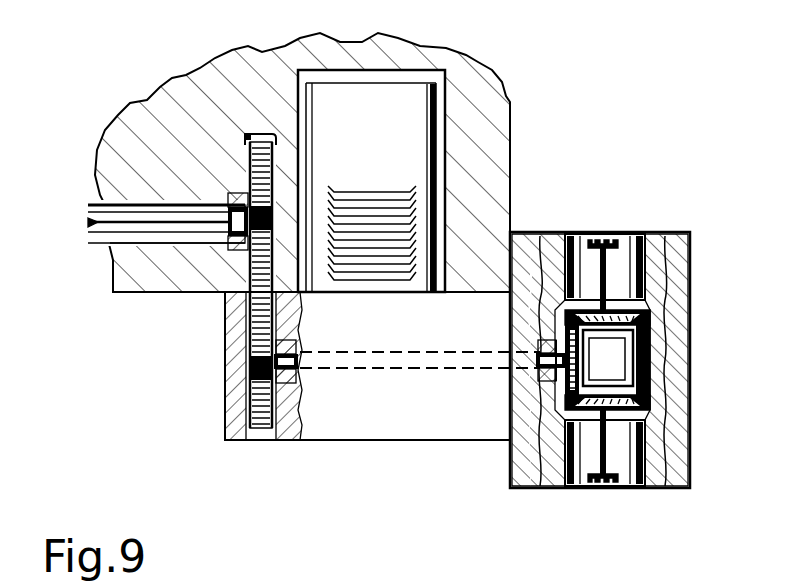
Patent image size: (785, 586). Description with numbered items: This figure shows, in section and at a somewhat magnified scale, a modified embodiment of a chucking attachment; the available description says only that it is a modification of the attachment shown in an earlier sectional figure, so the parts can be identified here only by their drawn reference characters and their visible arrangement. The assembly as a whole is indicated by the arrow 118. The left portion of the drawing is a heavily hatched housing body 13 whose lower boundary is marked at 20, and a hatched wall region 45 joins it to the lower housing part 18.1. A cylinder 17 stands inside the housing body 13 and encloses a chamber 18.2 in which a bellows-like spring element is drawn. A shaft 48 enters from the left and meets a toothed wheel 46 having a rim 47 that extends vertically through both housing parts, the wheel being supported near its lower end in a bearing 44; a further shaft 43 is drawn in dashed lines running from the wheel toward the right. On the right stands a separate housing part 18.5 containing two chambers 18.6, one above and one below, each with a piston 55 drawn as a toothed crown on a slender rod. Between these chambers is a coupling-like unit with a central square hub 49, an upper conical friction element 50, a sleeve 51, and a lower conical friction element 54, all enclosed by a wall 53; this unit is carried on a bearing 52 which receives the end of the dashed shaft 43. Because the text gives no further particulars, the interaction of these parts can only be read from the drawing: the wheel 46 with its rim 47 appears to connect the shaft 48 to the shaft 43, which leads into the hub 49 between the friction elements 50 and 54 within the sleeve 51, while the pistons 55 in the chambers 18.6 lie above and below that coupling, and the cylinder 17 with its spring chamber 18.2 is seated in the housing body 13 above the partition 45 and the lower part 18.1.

The housing 13 is at (114, 150).
The cylinder 17 is at (334, 78).
The lower housing part 18.1 is at (266, 441).
The spring chamber 18.2 is at (404, 96).
The right housing part 18.5 is at (512, 466).
The piston chamber 18.6 is at (628, 258).
The housing wall 20 is at (130, 293).
The shaft 43 is at (418, 362).
The bearing 44 is at (250, 398).
The housing partition 45 is at (236, 300).
The gear wheel 46 is at (248, 160).
The gear rim 47 is at (252, 135).
The drive shaft 48 is at (98, 226).
The coupling hub 49 is at (634, 354).
The upper friction disc 50 is at (635, 326).
The coupling sleeve 51 is at (632, 378).
The bearing 52 is at (540, 346).
The coupling housing wall 53 is at (660, 304).
The lower friction disc 54 is at (640, 398).
The piston 55 is at (600, 236).
The coupling assembly 118 is at (341, 480).